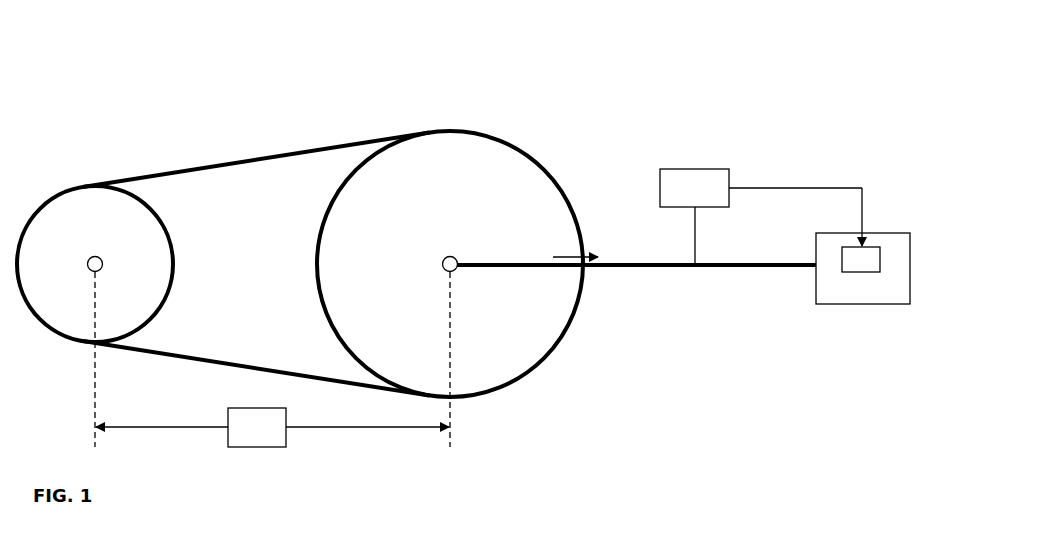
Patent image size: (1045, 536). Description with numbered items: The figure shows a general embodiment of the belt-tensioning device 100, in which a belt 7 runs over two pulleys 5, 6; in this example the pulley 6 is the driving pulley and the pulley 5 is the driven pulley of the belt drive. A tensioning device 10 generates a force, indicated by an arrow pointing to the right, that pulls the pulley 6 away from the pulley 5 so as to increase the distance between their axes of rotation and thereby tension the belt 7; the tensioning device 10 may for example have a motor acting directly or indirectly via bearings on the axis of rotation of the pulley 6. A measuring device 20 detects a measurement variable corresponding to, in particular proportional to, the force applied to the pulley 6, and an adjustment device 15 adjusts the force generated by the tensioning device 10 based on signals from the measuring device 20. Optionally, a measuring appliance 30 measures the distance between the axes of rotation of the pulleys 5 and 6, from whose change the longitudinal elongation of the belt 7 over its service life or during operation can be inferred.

The belt-tensioning device 100 is at (146, 90).
The pulley 5 is at (53, 220).
The pulley 6 is at (492, 155).
The belt 7 is at (212, 167).
The tensioning device 10 is at (836, 305).
The adjustment device 15 is at (878, 246).
The measuring device 20 is at (683, 169).
The measuring appliance 30 is at (268, 448).